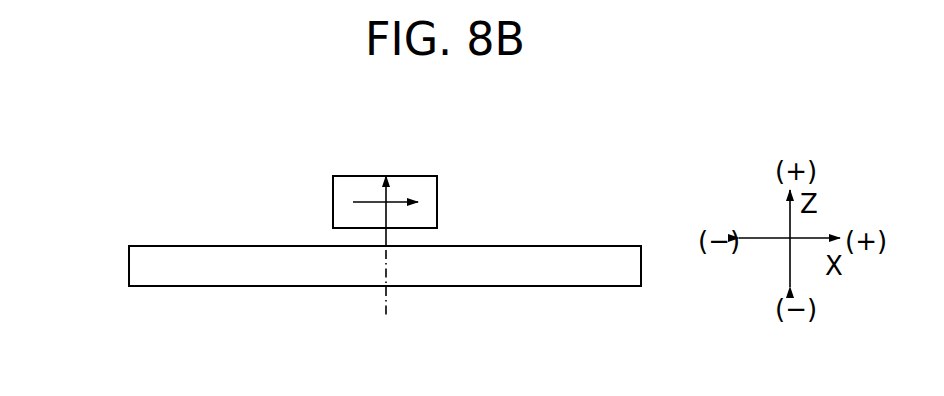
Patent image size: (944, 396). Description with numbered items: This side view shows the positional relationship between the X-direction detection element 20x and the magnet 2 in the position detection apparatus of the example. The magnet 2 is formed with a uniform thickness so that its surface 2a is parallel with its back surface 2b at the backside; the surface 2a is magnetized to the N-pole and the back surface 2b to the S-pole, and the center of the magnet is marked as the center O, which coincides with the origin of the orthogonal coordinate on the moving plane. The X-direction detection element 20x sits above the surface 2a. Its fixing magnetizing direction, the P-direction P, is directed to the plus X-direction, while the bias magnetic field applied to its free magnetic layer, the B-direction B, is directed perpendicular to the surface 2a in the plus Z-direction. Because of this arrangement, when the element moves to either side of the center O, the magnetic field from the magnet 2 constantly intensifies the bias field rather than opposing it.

The magnet 2 is at (128, 283).
The surface 2a is at (170, 246).
The back surface 2b is at (214, 288).
The X-direction detection element 20x is at (333, 202).
The B-direction B is at (387, 230).
The P-direction P is at (406, 205).
The center of the magnet O is at (389, 246).